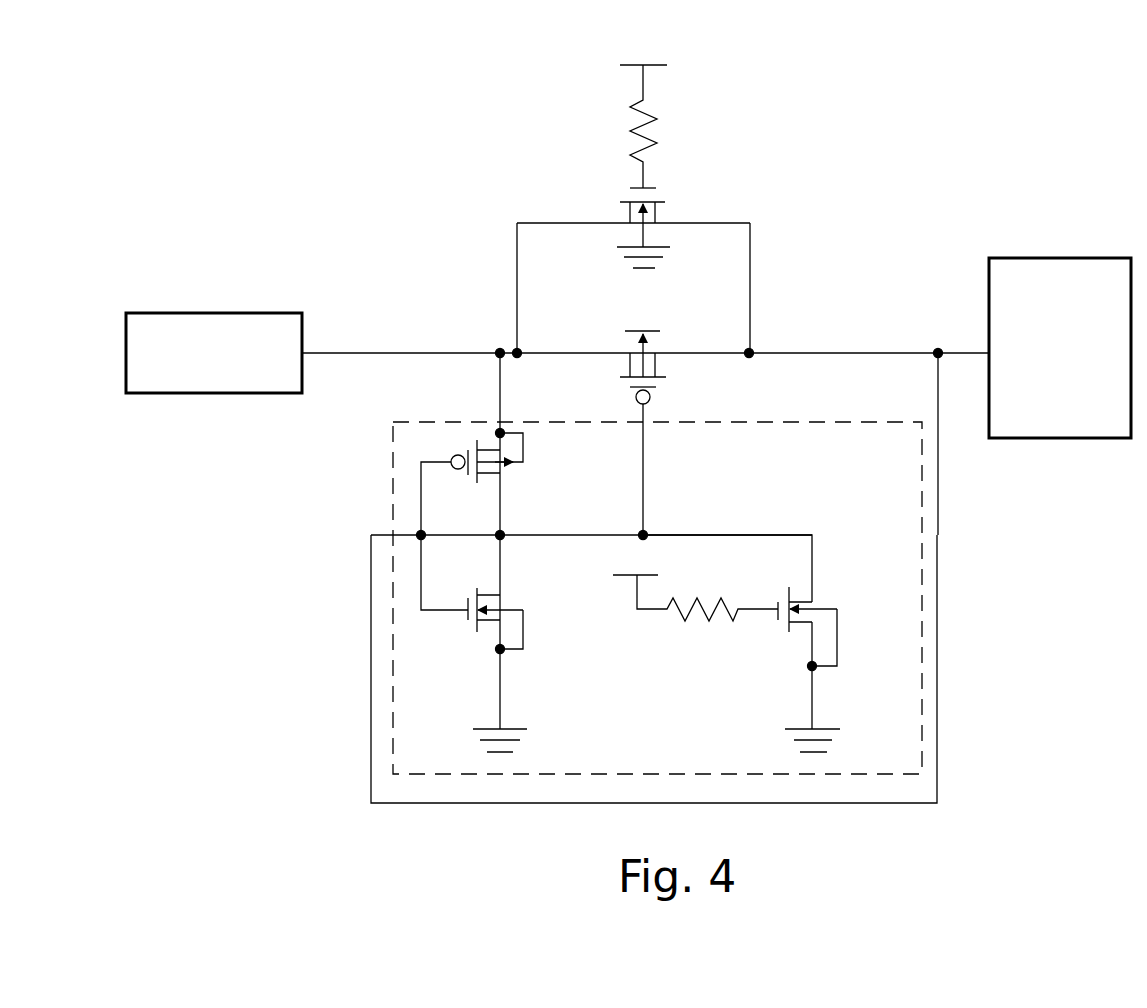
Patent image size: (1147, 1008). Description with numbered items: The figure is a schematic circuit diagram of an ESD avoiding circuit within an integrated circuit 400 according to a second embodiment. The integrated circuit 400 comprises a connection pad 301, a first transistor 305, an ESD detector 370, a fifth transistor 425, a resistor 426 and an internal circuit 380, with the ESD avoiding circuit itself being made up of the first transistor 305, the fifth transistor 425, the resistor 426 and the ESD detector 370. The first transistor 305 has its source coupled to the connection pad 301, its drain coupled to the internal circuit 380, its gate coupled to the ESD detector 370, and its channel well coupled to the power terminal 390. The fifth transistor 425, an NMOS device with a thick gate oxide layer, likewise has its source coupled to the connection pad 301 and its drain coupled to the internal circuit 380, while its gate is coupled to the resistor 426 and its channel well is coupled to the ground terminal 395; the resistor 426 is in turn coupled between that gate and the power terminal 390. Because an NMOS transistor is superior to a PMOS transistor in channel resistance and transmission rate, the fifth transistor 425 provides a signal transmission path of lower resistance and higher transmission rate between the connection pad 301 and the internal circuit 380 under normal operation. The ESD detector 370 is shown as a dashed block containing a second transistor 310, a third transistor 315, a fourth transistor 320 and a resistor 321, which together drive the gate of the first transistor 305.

The integrated circuit 400 is at (240, 143).
The connection pad 301 is at (200, 313).
The internal circuit 380 is at (1058, 258).
The power terminal 390 is at (625, 65).
The resistor 426 is at (650, 155).
The fifth transistor 425 is at (630, 228).
The ground terminal 395 is at (637, 270).
The first transistor 305 is at (655, 352).
The ESD detector 370 is at (393, 492).
The second transistor 310 is at (503, 462).
The third transistor 315 is at (503, 608).
The fourth transistor 320 is at (813, 605).
The resistor 321 is at (672, 612).